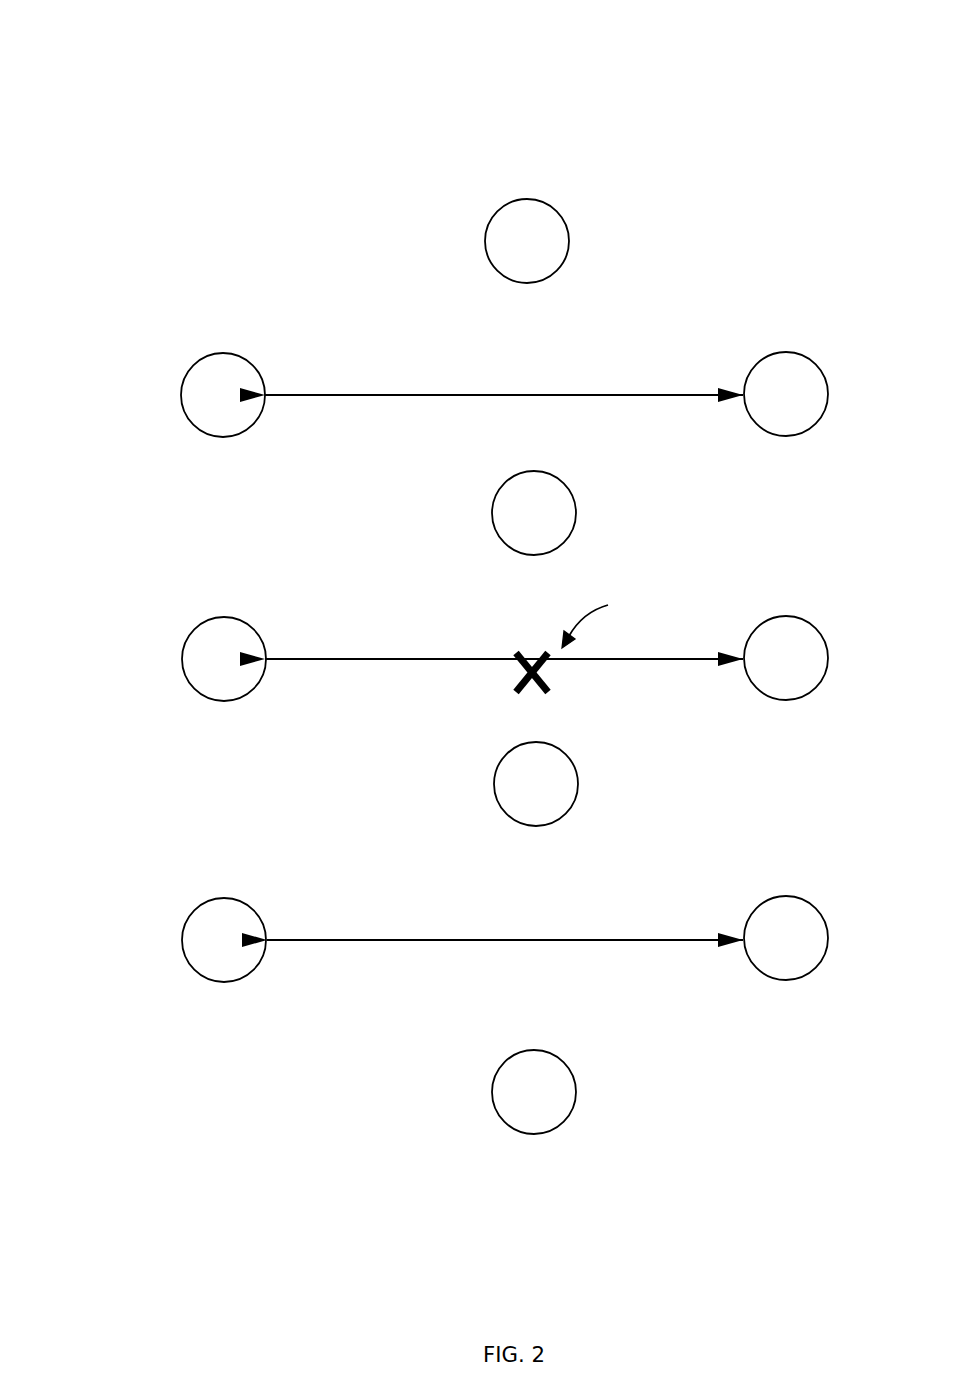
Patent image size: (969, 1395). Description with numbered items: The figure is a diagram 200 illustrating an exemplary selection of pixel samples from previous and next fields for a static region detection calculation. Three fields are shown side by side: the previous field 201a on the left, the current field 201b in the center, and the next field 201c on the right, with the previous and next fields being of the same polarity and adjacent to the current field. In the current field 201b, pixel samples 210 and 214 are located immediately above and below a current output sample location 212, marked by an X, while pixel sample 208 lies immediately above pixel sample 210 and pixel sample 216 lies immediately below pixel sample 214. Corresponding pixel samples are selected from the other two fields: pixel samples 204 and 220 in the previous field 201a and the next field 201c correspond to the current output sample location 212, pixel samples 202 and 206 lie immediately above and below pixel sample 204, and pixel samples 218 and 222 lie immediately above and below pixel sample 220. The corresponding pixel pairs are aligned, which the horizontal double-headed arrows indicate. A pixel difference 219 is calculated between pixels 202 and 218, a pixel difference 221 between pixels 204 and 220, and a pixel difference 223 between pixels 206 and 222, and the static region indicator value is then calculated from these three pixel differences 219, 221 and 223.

The interpolation sample diagram 200 is at (142, 138).
The previous field 201a is at (152, 307).
The current field 201b is at (455, 181).
The next field 201c is at (749, 306).
The pixel sample 202 is at (224, 437).
The pixel sample 204 is at (226, 701).
The pixel sample 206 is at (225, 982).
The pixel sample 208 is at (528, 283).
The pixel sample 210 is at (534, 555).
The current output sample location 212 is at (523, 690).
The pixel sample 214 is at (536, 826).
The pixel sample 216 is at (533, 1134).
The pixel sample 218 is at (784, 436).
The pixel difference 219 is at (393, 396).
The pixel sample 220 is at (787, 700).
The pixel difference 221 is at (362, 660).
The pixel sample 222 is at (787, 980).
The pixel difference 223 is at (384, 942).